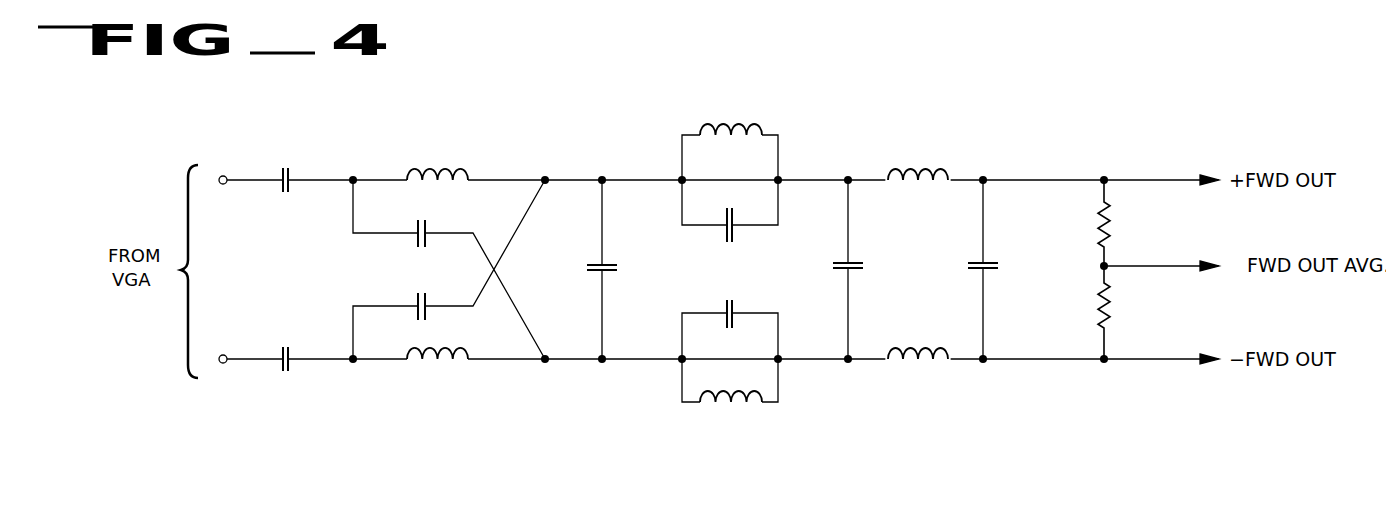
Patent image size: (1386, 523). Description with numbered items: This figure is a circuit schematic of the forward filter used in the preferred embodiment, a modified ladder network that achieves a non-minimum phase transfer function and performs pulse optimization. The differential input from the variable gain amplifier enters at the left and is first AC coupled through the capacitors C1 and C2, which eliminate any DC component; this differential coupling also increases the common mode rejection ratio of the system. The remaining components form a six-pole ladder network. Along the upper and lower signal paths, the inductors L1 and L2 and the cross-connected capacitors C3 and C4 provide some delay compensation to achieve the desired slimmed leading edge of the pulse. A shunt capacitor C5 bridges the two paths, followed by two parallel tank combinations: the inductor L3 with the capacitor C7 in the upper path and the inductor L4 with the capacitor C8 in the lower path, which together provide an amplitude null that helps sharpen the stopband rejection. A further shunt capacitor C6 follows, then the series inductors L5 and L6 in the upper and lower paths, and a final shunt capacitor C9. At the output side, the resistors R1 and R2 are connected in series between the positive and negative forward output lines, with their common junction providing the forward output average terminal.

The capacitor C1 is at (290, 178).
The capacitor C2 is at (290, 357).
The capacitor C3 is at (449, 269).
The capacitor C4 is at (449, 269).
The capacitor C5 is at (629, 269).
The capacitor C6 is at (876, 269).
The capacitor C7 is at (730, 217).
The capacitor C8 is at (730, 318).
The capacitor C9 is at (1010, 269).
The inductor L1 is at (445, 171).
The inductor L2 is at (441, 378).
The inductor L3 is at (730, 135).
The inductor L4 is at (730, 393).
The inductor L5 is at (918, 169).
The inductor L6 is at (918, 356).
The resistor R1 is at (1129, 223).
The resistor R2 is at (1129, 312).